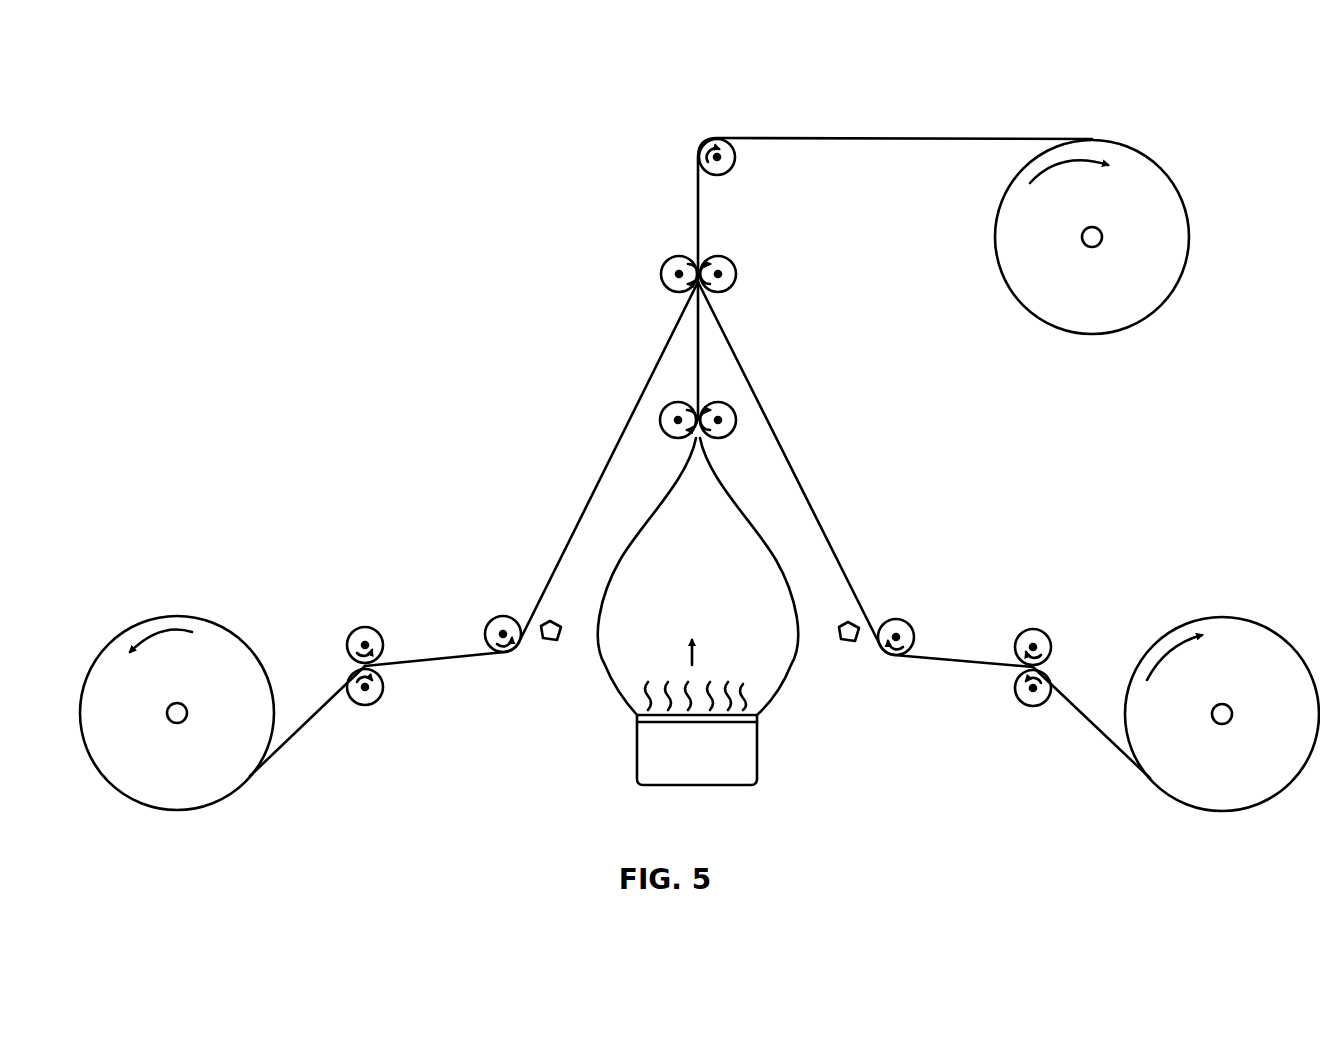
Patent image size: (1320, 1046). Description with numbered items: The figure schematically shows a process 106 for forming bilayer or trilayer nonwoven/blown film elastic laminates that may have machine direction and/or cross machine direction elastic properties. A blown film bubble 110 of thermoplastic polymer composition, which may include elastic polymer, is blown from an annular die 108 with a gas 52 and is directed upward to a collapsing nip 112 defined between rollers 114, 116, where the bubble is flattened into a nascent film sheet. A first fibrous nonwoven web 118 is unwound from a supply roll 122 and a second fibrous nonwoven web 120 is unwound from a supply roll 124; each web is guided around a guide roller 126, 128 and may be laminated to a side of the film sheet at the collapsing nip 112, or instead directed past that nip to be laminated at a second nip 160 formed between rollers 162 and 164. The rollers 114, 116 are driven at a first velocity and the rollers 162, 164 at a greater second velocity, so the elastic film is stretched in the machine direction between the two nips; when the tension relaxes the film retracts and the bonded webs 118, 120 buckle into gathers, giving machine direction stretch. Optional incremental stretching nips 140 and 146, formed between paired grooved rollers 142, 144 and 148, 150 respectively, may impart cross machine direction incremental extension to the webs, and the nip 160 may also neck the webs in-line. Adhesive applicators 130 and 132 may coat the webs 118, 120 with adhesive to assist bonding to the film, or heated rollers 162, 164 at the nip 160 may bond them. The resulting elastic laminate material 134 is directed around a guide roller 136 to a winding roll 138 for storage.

The process 106 is at (745, 44).
The annular die 108 is at (758, 762).
The blown film bubble 110 is at (613, 690).
The collapsing nip 112 is at (704, 394).
The roller 114 is at (732, 431).
The roller 116 is at (666, 431).
The first fibrous nonwoven web 118 is at (284, 742).
The second fibrous nonwoven web 120 is at (1101, 735).
The supply roll 122 is at (186, 612).
The supply roll 124 is at (1197, 615).
The guide roller 126 is at (490, 620).
The guide roller 128 is at (893, 617).
The adhesive applicator 130 is at (541, 648).
The adhesive applicator 132 is at (846, 650).
The elastic laminate material 134 is at (697, 200).
The guide roller 136 is at (737, 164).
The winding roll 138 is at (996, 228).
The incremental stretching nip 140 is at (1050, 667).
The grooved roller 142 is at (1040, 708).
The grooved roller 144 is at (1031, 628).
The incremental stretching nip 146 is at (352, 664).
The grooved roller 148 is at (366, 626).
The grooved roller 150 is at (360, 706).
The second nip 160 is at (704, 250).
The roller 162 is at (737, 272).
The roller 164 is at (660, 272).
The gas 52 is at (745, 695).